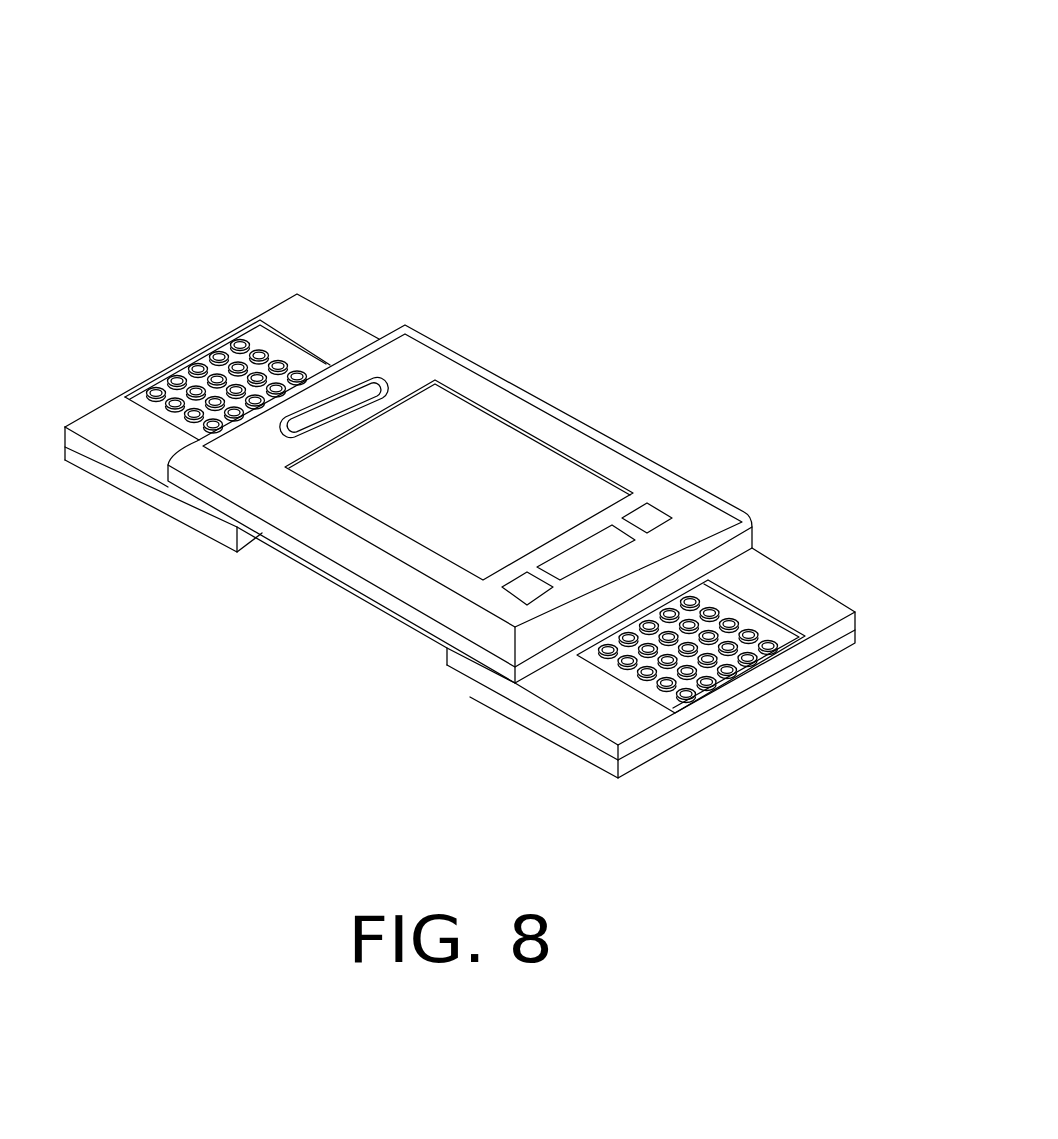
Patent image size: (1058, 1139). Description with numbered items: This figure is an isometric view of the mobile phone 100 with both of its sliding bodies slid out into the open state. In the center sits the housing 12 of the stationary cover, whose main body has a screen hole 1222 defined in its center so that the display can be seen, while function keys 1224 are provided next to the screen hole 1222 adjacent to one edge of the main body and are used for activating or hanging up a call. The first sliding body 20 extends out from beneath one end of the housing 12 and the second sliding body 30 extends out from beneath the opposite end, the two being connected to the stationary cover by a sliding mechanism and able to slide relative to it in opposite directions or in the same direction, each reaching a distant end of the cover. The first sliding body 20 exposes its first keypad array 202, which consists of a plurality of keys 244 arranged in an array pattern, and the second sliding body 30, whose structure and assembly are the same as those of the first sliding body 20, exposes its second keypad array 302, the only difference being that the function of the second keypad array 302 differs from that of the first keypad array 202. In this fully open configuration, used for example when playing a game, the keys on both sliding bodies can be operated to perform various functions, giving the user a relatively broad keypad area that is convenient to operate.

The mobile phone 100 is at (462, 53).
The housing 12 is at (432, 363).
The screen hole 1222 is at (502, 463).
The function keys 1224 is at (650, 518).
The first sliding body 20 is at (293, 305).
The keys 244 is at (229, 331).
The first keypad array 202 is at (173, 377).
The second sliding body 30 is at (787, 597).
The second keypad array 302 is at (722, 672).